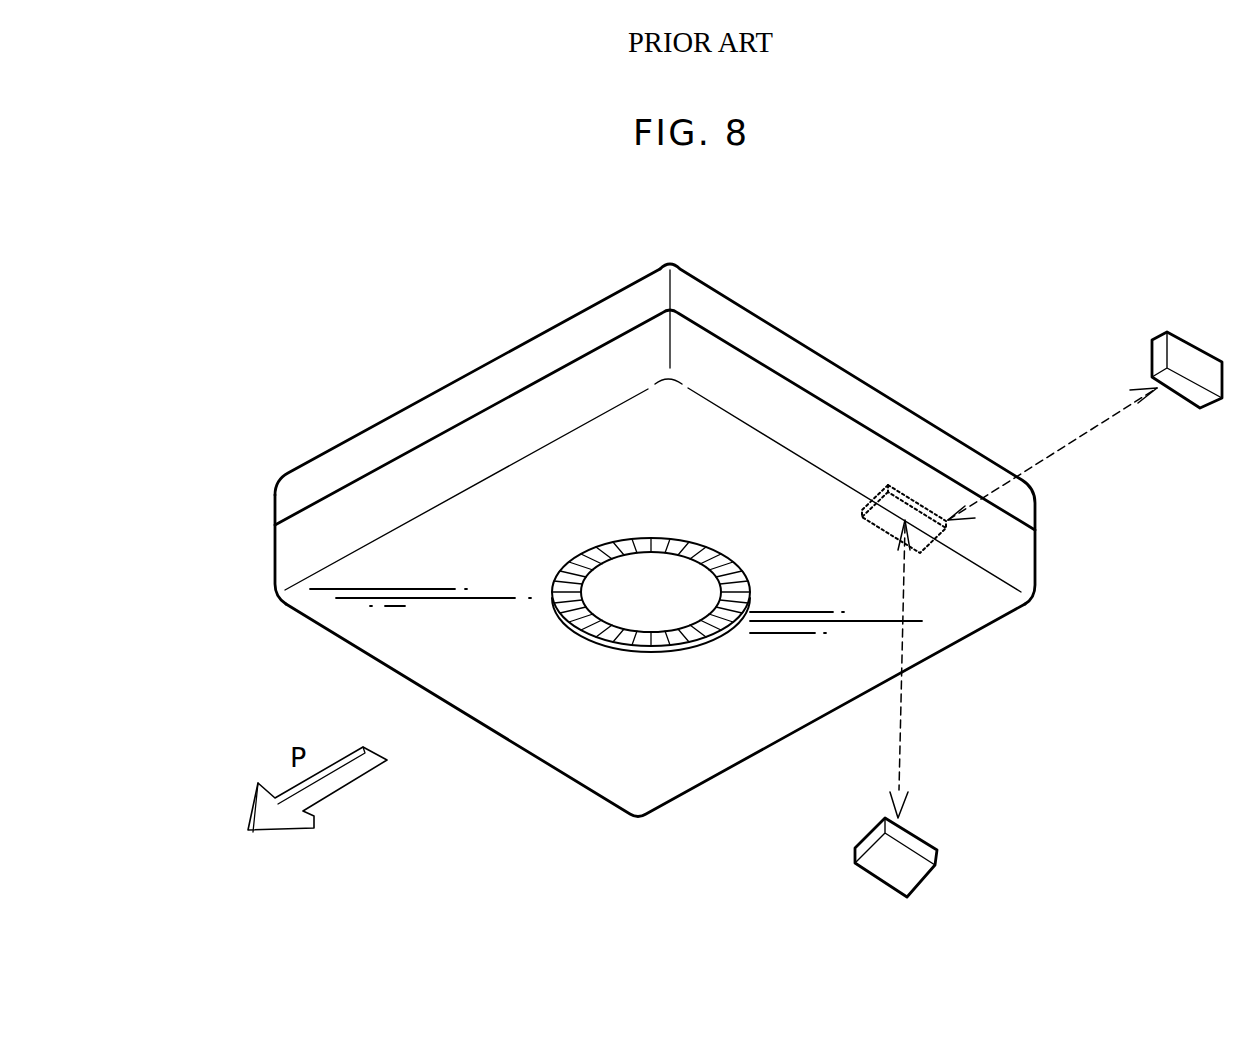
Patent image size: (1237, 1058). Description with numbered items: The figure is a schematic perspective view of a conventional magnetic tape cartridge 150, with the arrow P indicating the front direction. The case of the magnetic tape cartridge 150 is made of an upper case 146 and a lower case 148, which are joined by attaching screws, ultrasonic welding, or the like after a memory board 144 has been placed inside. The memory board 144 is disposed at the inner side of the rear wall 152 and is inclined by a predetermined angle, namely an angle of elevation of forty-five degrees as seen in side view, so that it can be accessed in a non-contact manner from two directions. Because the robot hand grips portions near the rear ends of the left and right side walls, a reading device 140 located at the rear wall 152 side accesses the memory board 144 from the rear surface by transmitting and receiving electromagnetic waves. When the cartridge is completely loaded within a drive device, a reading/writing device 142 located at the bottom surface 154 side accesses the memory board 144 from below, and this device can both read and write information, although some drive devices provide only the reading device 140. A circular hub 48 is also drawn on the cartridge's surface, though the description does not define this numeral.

The magnetic tape cartridge 150 is at (723, 252).
The upper case 146 is at (471, 367).
The lower case 148 is at (271, 564).
The rear wall 152 is at (830, 427).
The bottom surface 154 is at (535, 708).
The memory board 144 is at (873, 507).
The reading device 140 is at (1157, 355).
The reading/writing device 142 is at (910, 875).
The hub 48 is at (668, 636).